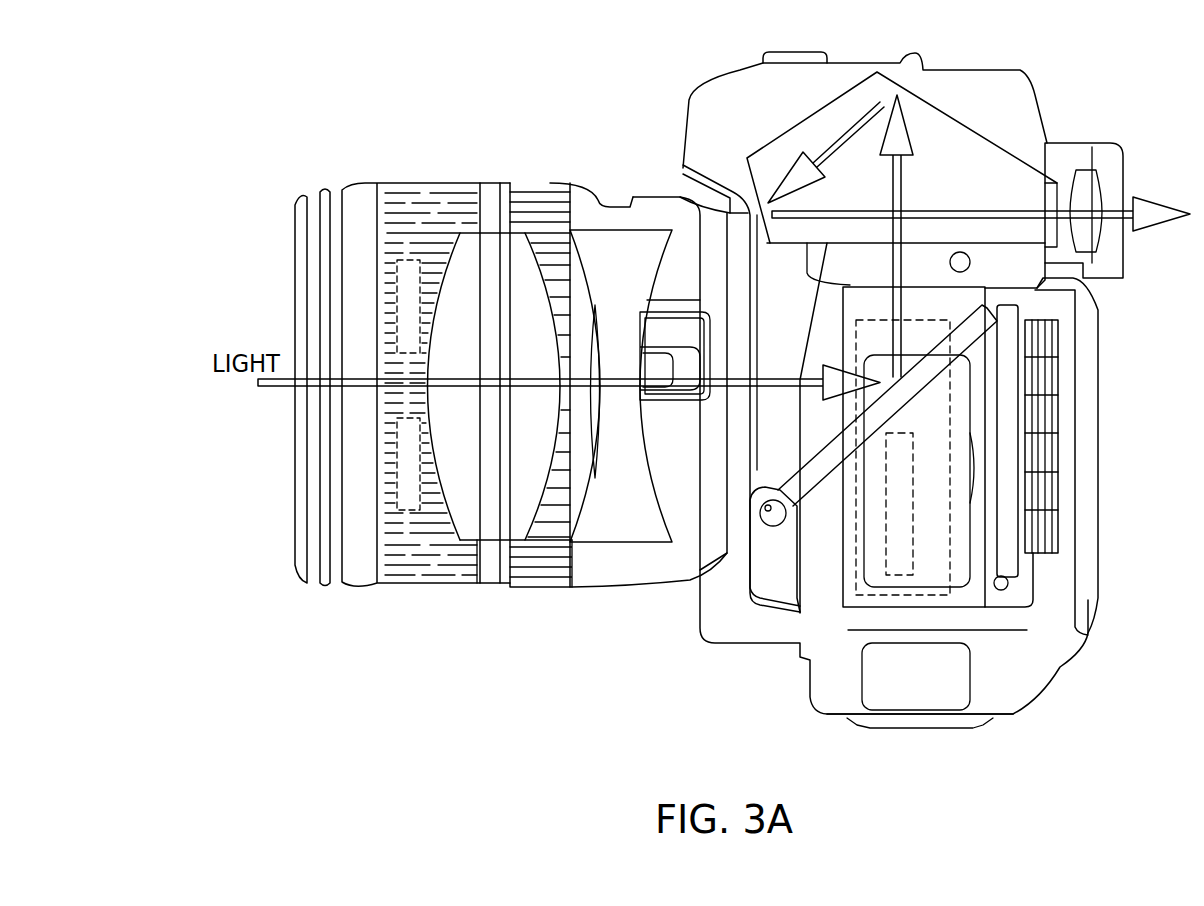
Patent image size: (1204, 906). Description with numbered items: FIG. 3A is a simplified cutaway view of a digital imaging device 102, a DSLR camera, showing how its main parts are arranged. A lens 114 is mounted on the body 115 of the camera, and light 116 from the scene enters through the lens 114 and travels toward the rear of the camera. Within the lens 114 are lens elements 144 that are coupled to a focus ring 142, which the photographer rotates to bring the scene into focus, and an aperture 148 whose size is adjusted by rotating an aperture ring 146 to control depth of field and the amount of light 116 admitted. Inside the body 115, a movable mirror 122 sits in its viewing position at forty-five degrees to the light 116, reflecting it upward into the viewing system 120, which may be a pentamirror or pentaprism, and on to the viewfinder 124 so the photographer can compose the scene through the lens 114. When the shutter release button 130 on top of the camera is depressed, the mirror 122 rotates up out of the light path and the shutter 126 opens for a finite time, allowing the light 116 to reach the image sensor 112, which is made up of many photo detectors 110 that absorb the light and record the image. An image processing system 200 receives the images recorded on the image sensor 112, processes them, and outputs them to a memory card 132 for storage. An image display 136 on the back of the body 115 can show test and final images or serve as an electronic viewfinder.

The digital imaging device 102 is at (620, 712).
The photo detectors 110 is at (1058, 508).
The image sensor 112 is at (1060, 373).
The lens 114 is at (382, 625).
The body 115 is at (1045, 698).
The light 116 is at (1047, 190).
The viewing system 120 is at (958, 150).
The movable mirror 122 is at (797, 503).
The viewfinder 124 is at (1150, 177).
The shutter 126 is at (1012, 313).
The shutter release button 130 is at (793, 58).
The memory card 132 is at (910, 575).
The image display 136 is at (1098, 433).
The focus ring 142 is at (547, 570).
The lens elements 144 is at (607, 253).
The aperture ring 146 is at (443, 578).
The aperture 148 is at (405, 275).
The image processing system 200 is at (877, 597).